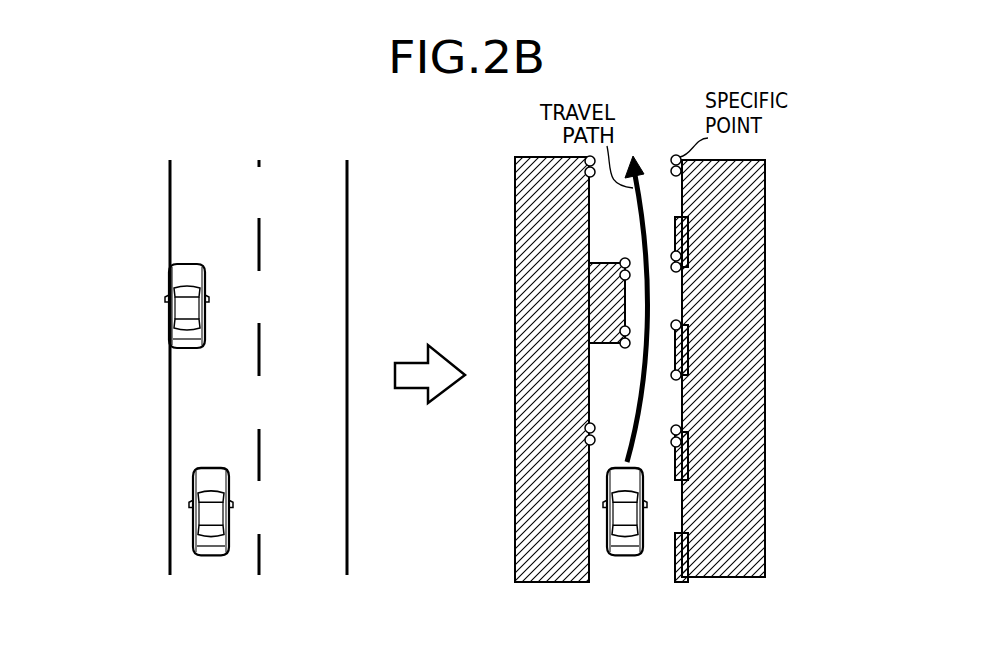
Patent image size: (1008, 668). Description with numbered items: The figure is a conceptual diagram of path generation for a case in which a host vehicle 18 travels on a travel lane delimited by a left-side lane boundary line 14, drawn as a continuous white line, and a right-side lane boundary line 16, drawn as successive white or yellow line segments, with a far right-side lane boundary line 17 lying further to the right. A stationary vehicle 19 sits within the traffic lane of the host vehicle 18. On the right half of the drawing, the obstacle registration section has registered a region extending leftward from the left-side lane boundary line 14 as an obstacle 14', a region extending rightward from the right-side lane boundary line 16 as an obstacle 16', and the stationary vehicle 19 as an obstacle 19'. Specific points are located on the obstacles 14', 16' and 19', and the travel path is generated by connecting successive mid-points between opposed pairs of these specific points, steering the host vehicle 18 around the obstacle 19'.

The left-side lane boundary line 14 is at (138, 357).
The far right-side lane boundary line 17 is at (347, 190).
The right-side lane boundary line 16 is at (295, 367).
The stationary vehicle 19 is at (149, 306).
The host vehicle 18 is at (212, 523).
The obstacle 14' is at (526, 369).
The obstacle 16' is at (750, 368).
The obstacle 19' is at (708, 303).